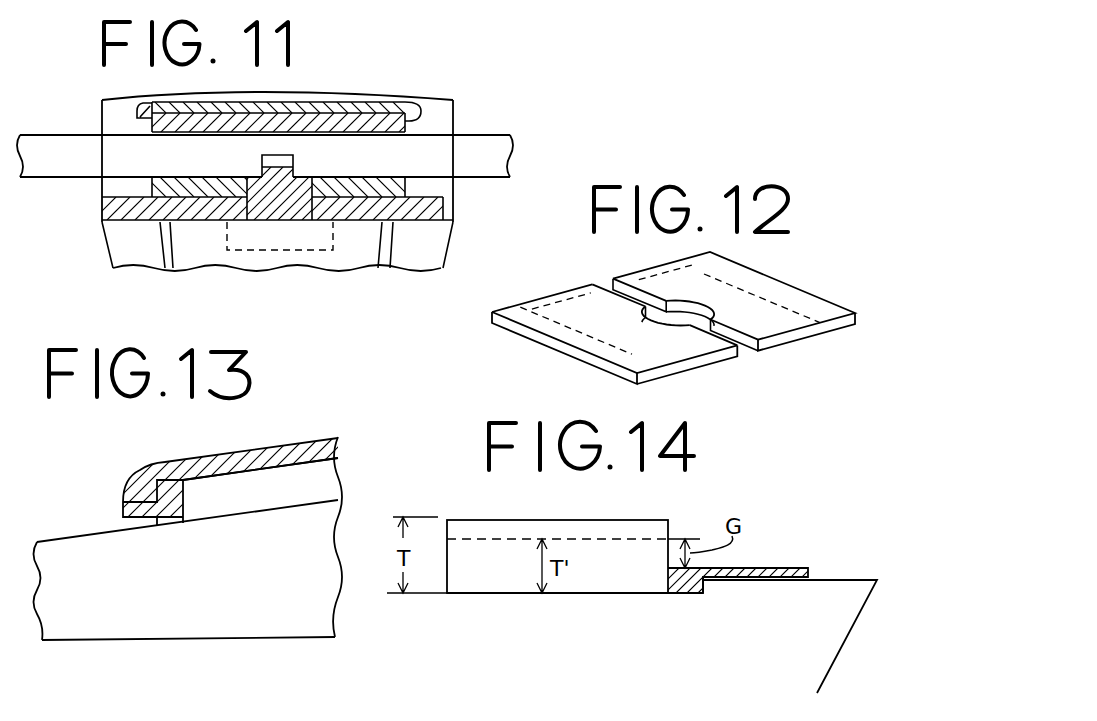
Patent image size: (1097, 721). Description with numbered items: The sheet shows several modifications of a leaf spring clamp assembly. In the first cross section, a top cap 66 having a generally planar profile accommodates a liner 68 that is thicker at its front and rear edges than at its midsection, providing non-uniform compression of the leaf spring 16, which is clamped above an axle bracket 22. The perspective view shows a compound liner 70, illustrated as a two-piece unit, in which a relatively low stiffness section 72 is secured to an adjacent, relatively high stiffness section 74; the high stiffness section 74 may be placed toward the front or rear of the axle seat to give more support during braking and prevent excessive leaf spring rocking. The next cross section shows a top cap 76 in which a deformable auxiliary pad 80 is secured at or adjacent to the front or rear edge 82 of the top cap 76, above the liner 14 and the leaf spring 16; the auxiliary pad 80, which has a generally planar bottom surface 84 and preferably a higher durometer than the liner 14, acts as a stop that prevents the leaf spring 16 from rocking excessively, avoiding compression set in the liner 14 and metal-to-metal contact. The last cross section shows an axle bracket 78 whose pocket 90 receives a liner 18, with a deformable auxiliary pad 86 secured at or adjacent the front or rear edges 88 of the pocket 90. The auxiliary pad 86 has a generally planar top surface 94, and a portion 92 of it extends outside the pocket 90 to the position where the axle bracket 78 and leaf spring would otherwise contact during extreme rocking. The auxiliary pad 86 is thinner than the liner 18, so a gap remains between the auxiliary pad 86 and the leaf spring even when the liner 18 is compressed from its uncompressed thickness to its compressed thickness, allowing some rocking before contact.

In FIG. 13, the liner 14 is at (300, 493).
In FIG. 11, the leaf spring 16 is at (487, 140).
In FIG. 13, the leaf spring 16 is at (300, 576).
In FIG. 14, the bottom liner 18 is at (507, 527).
In FIG. 11, the axle bracket 22 is at (445, 206).
In FIG. 11, the top cap 66 is at (393, 105).
In FIG. 11, the liner 68 is at (171, 117).
In FIG. 12, the liner 70 is at (700, 365).
In FIG. 12, the low stiffness section 72 is at (660, 280).
In FIG. 12, the high stiffness section 74 is at (512, 312).
In FIG. 13, the top cap 76 is at (230, 460).
In FIG. 14, the axle bracket 78 is at (800, 672).
In FIG. 13, the auxiliary pad 80 is at (127, 516).
In FIG. 13, the front and/or rear edge 82 is at (132, 484).
In FIG. 13, the bottom surface 84 is at (160, 526).
In FIG. 14, the auxiliary pad 86 is at (687, 590).
In FIG. 14, the front and/or rear edges 88 is at (705, 592).
In FIG. 14, the pocket 90 is at (610, 594).
In FIG. 14, the portion 92 is at (760, 580).
In FIG. 14, the top surface 94 is at (808, 568).